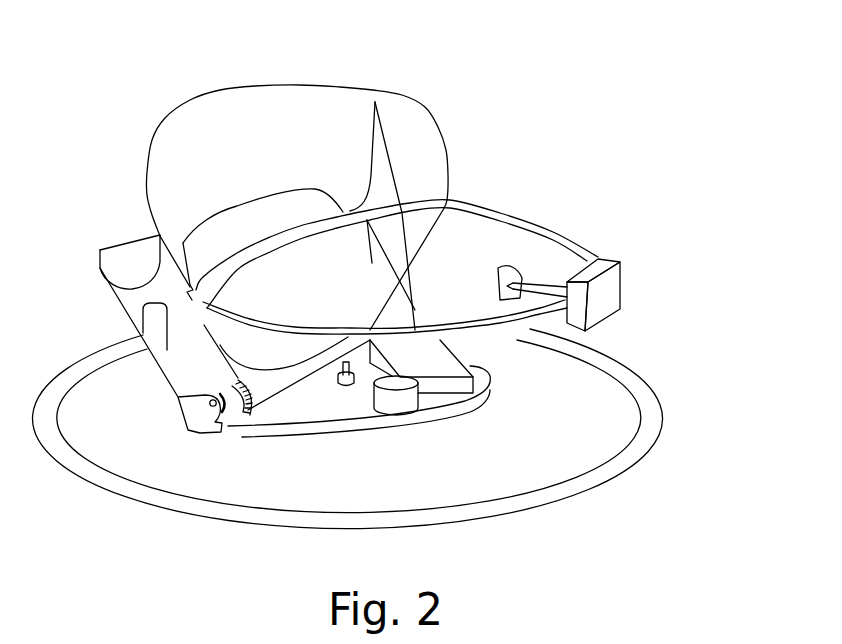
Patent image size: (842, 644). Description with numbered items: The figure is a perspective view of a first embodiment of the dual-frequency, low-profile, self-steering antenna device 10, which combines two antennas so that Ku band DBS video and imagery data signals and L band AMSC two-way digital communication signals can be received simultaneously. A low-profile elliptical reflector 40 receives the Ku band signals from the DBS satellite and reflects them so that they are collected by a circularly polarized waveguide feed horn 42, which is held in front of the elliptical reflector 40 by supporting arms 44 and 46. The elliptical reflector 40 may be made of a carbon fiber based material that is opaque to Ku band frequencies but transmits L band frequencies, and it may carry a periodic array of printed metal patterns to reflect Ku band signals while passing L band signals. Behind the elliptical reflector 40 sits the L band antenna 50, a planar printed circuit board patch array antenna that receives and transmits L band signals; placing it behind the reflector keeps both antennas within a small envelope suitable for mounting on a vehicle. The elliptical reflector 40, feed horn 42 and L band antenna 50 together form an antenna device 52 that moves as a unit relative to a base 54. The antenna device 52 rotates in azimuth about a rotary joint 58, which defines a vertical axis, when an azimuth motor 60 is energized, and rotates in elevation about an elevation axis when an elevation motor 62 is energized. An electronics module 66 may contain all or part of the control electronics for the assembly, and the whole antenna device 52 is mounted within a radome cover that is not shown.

The antenna device 10 is at (130, 72).
The elliptical reflector 40 is at (304, 86).
The feed horn 42 is at (540, 278).
The arm 44 is at (300, 322).
The arm 46 is at (521, 210).
The L band antenna 50 is at (141, 238).
The antenna device 52 is at (98, 298).
The base 54 is at (661, 416).
The rotary joint 58 is at (340, 383).
The azimuth motor 60 is at (403, 402).
The elevation motor 62 is at (230, 428).
The electronics module 66 is at (458, 358).